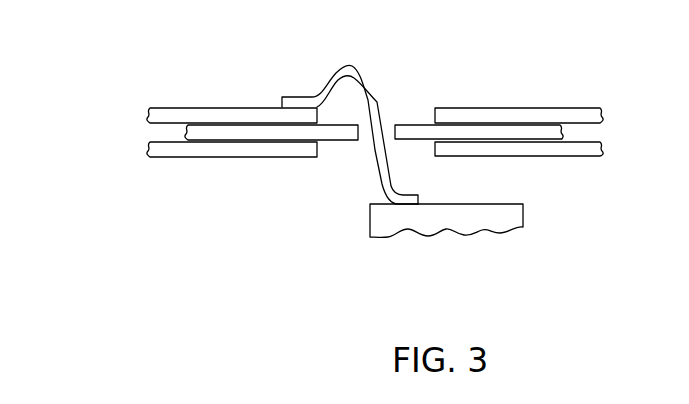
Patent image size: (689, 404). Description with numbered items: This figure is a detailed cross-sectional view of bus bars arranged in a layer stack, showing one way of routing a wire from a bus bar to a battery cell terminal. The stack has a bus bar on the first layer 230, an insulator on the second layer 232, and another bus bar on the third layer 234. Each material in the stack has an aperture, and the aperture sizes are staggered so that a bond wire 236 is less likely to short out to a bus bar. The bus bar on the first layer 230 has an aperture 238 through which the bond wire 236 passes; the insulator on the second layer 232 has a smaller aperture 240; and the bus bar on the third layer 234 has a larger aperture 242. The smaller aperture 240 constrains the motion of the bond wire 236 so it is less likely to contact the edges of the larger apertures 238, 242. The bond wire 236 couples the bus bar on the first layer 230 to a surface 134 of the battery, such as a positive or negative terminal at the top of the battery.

The first layer 230 is at (136, 117).
The second layer 232 is at (172, 132).
The third layer 234 is at (135, 156).
The bond wire 236 is at (343, 72).
The aperture 238 is at (414, 103).
The smaller aperture 240 is at (389, 115).
The larger aperture 242 is at (404, 159).
The surface 134 is at (382, 222).